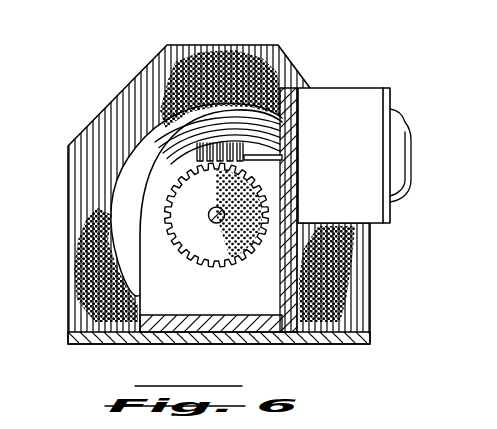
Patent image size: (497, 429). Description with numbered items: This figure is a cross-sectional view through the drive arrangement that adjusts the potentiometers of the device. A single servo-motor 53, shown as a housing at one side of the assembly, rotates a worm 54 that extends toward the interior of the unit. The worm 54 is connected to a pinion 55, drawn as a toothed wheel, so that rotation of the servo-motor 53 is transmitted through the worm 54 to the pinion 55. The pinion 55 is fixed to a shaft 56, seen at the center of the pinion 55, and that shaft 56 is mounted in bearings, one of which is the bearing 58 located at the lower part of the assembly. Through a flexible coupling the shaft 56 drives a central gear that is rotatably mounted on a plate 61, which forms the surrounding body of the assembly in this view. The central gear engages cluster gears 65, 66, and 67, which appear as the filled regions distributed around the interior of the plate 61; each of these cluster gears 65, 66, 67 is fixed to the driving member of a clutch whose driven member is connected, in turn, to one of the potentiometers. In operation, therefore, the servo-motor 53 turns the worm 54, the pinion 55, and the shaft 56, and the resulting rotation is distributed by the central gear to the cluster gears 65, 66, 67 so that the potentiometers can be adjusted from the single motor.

The servo-motor 53 is at (362, 101).
The worm 54 is at (282, 153).
The pinion 55 is at (214, 248).
The shaft 56 is at (211, 221).
The bearing 58 is at (157, 304).
The plate 61 is at (100, 123).
The cluster gear 65 is at (360, 273).
The cluster gear 66 is at (223, 54).
The cluster gear 67 is at (76, 268).